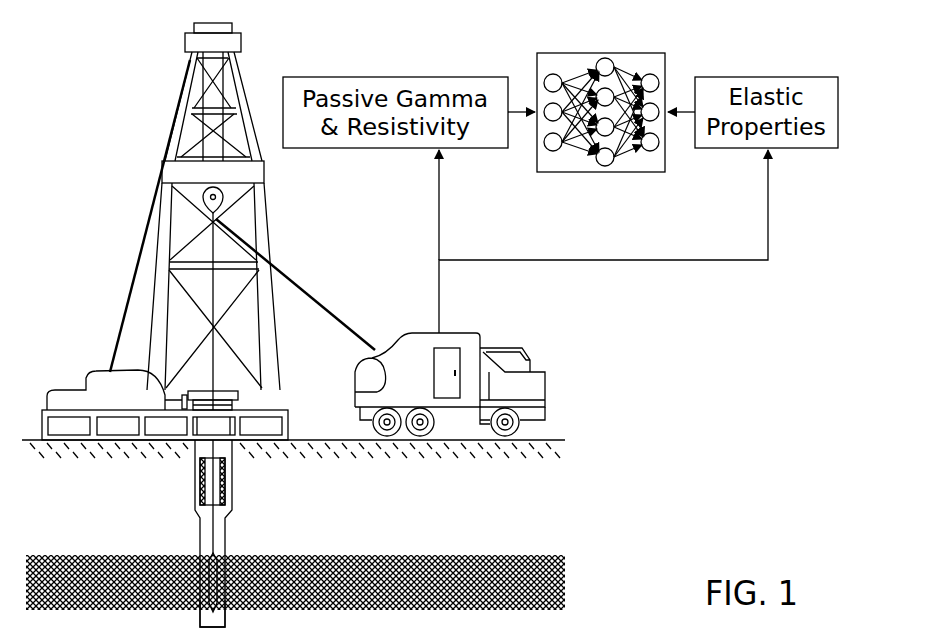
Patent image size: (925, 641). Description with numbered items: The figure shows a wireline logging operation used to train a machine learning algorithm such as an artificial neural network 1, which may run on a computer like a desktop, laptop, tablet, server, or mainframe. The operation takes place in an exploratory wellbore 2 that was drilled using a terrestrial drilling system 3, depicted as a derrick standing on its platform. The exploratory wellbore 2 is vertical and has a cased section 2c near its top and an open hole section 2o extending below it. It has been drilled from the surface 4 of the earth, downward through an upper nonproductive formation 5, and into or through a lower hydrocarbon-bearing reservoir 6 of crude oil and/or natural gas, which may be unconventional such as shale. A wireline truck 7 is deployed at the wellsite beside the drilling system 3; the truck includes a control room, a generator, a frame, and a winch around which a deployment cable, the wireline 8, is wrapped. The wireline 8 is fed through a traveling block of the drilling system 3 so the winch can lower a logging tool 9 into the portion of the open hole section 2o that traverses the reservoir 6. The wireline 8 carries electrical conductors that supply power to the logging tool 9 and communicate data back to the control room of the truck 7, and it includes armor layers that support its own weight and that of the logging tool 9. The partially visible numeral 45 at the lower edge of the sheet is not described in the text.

The artificial neural network 1 is at (600, 172).
The exploratory wellbore 2 is at (277, 486).
The cased section 2c is at (233, 478).
The open hole section 2o is at (226, 620).
The terrestrial drilling system 3 is at (76, 50).
The surface 4 is at (320, 439).
The upper nonproductive formation 5 is at (369, 517).
The lower hydrocarbon-bearing reservoir 6 is at (120, 560).
The wireline truck 7 is at (413, 333).
The wireline 8 is at (300, 283).
The logging tool 9 is at (215, 560).
The page number 45 is at (586, 635).